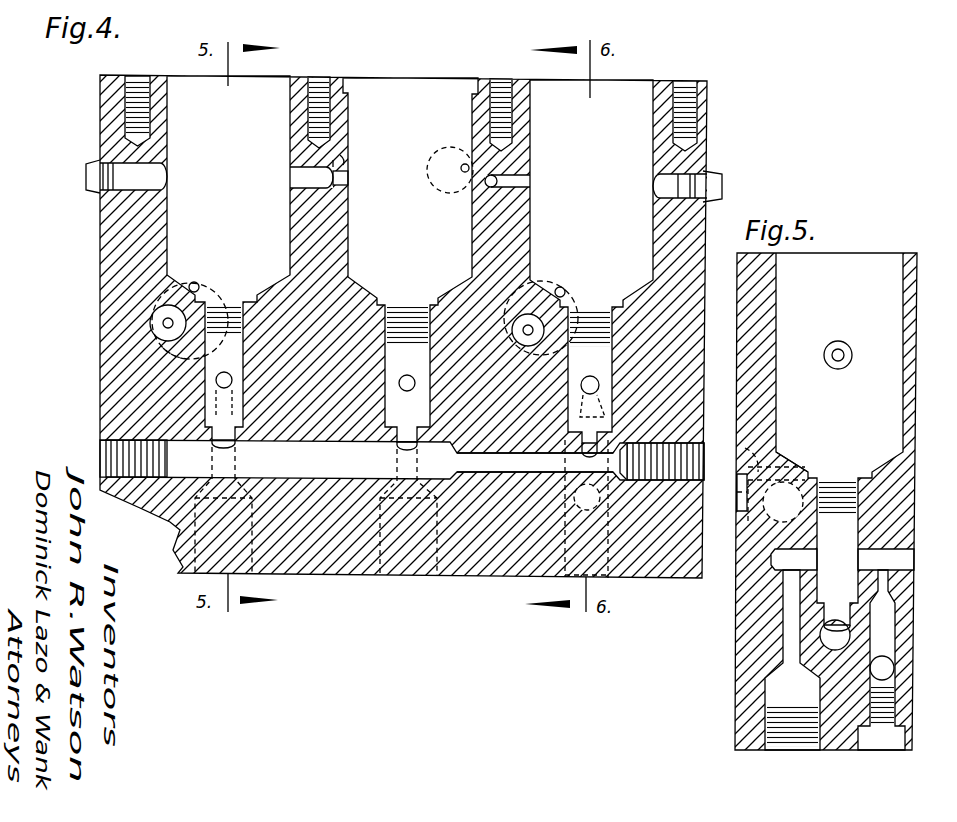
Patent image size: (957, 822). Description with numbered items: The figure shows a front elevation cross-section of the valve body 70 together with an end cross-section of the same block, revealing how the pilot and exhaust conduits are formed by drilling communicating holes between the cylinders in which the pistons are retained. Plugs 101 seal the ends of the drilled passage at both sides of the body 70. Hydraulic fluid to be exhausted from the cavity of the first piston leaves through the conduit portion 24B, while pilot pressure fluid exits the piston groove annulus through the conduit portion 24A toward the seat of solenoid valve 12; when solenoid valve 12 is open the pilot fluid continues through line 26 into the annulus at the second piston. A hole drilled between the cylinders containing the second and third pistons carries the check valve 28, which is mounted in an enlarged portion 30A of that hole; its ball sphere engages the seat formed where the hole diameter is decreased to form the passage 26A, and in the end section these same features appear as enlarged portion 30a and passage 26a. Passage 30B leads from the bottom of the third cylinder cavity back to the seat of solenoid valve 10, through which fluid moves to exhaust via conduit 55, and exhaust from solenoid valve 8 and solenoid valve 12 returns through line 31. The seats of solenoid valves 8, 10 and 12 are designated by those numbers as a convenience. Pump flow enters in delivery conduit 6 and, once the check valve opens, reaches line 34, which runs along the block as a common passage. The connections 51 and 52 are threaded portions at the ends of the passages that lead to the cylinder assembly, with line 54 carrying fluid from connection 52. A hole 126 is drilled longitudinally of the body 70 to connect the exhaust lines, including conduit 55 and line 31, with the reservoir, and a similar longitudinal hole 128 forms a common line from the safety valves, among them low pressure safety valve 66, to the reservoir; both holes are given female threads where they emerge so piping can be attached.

In FIG. 4, the body 70 is at (100, 246).
In FIG. 4, the plugs 101 is at (88, 166).
In FIG. 4, the enlarged portion 30A is at (300, 168).
In FIG. 4, the passage 26A is at (349, 180).
In FIG. 4, the check valve 28 is at (346, 165).
In FIG. 4, the conduit portion 24A is at (533, 180).
In FIG. 4, the line 26 is at (463, 172).
In FIG. 4, the solenoid valve 12 is at (458, 210).
In FIG. 4, the passage 30B is at (200, 284).
In FIG. 5, the passage 30B is at (752, 450).
In FIG. 4, the conduit portion 24B is at (563, 289).
In FIG. 4, the solenoid valve 10 is at (174, 358).
In FIG. 5, the solenoid valve 10 is at (743, 497).
In FIG. 4, the conduit 55 is at (192, 360).
In FIG. 5, the conduit 55 is at (783, 511).
In FIG. 4, the line 54 is at (208, 400).
In FIG. 5, the line 54 is at (788, 633).
In FIG. 4, the line 31 is at (570, 362).
In FIG. 4, the solenoid valve 8 is at (550, 356).
In FIG. 4, the line 34 is at (325, 470).
In FIG. 5, the line 34 is at (845, 643).
In FIG. 4, the delivery conduit 6 is at (512, 460).
In FIG. 4, the cylinder connection 52 is at (250, 577).
In FIG. 5, the cylinder connection 52 is at (783, 752).
In FIG. 4, the connection 51 is at (384, 578).
In FIG. 5, the enlarged portion 30a is at (846, 346).
In FIG. 5, the passage 26a is at (838, 369).
In FIG. 5, the hole 126 is at (803, 466).
In FIG. 5, the low pressure safety valve 66 is at (884, 597).
In FIG. 5, the hole 128 is at (893, 660).